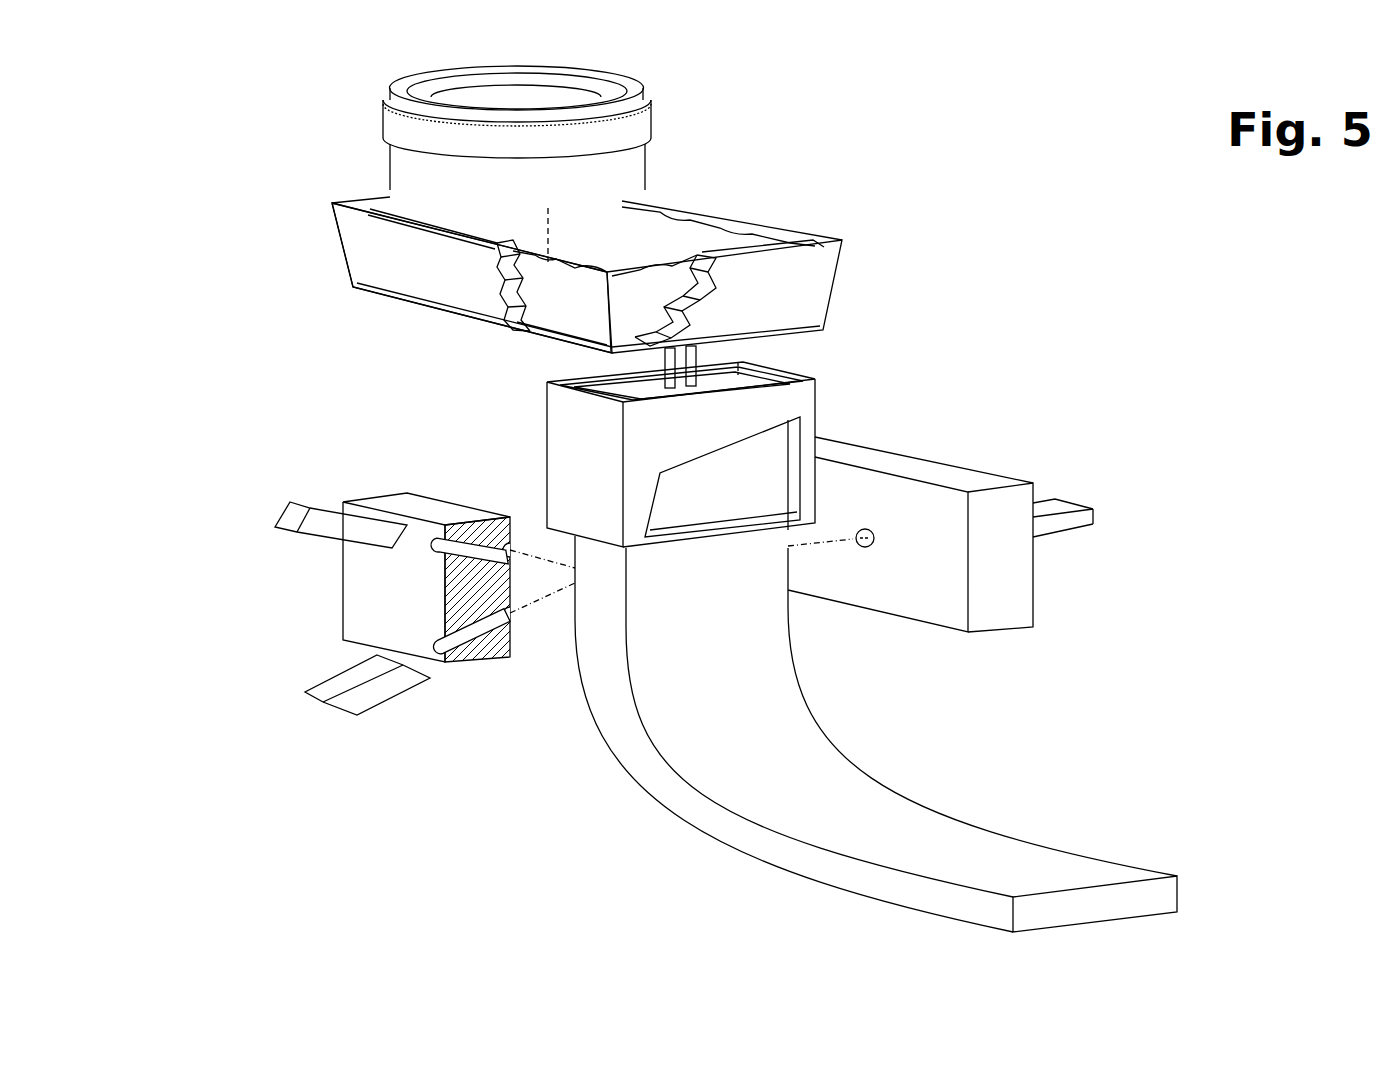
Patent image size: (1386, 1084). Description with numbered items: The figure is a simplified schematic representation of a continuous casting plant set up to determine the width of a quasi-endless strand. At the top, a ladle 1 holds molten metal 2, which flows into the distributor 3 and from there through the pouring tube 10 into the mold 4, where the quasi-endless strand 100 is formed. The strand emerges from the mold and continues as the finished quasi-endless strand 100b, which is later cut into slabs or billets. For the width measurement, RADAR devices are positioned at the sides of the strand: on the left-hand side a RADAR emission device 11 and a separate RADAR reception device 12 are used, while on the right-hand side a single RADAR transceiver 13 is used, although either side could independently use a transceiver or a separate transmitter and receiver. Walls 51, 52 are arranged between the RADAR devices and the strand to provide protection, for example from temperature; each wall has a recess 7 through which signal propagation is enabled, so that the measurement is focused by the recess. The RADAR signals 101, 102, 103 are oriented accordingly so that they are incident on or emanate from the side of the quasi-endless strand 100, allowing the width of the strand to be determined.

The ladle 1 is at (592, 170).
The molten metal 2 is at (578, 288).
The distributor 3 is at (800, 287).
The mold 4 is at (767, 407).
The recess 7 is at (455, 530).
The pouring tube 10 is at (672, 356).
The RADAR emission device 11 is at (365, 527).
The RADAR reception device 12 is at (345, 683).
The RADAR transceiver 13 is at (1045, 523).
The wall 51 is at (425, 588).
The wall 52 is at (993, 595).
The quasi-endless strand 100 is at (602, 612).
The finished quasi-endless strand 100b is at (1012, 868).
The RADAR signal 101 is at (537, 602).
The RADAR signal 102 is at (519, 555).
The RADAR signal 103 is at (828, 545).